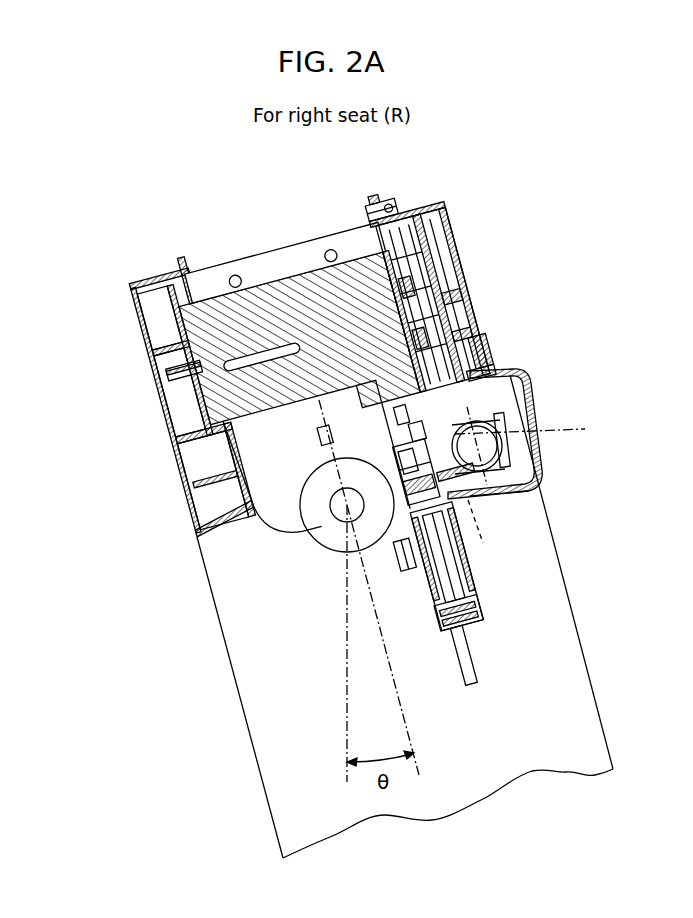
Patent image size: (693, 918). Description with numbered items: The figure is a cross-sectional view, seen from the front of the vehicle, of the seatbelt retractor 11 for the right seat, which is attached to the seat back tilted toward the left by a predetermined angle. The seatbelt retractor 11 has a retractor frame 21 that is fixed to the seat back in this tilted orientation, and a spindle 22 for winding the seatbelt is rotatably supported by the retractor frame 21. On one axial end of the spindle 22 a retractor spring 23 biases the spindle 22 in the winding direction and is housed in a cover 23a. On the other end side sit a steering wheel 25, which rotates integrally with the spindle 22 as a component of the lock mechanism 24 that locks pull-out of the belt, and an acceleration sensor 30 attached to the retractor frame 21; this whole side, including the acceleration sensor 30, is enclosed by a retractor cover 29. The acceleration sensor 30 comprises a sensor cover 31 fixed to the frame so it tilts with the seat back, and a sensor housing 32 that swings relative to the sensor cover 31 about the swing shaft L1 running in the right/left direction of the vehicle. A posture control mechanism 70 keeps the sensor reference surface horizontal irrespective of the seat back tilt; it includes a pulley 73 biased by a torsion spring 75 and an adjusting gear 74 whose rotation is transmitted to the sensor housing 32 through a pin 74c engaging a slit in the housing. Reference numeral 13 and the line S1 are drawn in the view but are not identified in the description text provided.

The seatbelt retractor 11 is at (490, 250).
The rod 13 is at (465, 663).
The retractor frame 21 is at (218, 280).
The spindle 22 is at (280, 320).
The retractor spring 23 is at (160, 318).
The cover 23a is at (140, 343).
The lock mechanism 24 is at (487, 351).
The steering wheel 25 is at (385, 218).
The retractor cover 29 is at (430, 215).
The acceleration sensor 30 is at (501, 418).
The sensor cover 31 is at (523, 453).
The sensor housing 32 is at (500, 497).
The posture control mechanism 70 is at (410, 578).
The pulley 73 is at (398, 465).
The adjusting gear 74 is at (404, 440).
The pin 74c is at (473, 497).
The torsion spring 75 is at (412, 548).
The swing shaft L1 is at (535, 432).
The axis line S1 is at (483, 543).